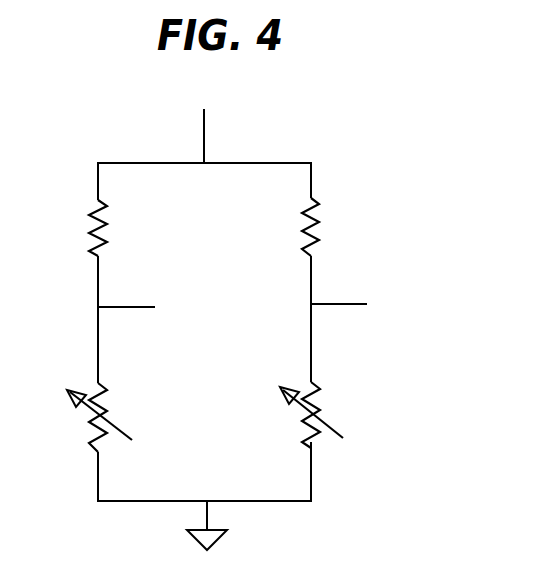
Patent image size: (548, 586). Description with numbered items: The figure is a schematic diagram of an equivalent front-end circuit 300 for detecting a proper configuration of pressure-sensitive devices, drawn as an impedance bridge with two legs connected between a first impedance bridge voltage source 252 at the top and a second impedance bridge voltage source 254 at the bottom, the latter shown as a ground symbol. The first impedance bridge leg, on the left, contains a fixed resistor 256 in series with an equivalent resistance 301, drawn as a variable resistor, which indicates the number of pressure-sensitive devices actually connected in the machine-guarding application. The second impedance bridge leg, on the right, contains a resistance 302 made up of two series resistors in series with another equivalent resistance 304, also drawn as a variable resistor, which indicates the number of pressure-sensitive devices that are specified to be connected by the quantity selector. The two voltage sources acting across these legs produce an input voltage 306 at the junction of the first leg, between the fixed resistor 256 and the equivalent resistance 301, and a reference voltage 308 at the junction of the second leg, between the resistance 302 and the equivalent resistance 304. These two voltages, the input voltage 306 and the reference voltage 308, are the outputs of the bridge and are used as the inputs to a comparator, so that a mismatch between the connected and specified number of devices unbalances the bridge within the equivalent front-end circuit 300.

The first impedance bridge voltage source 252 is at (226, 136).
The second impedance bridge voltage source 254 is at (217, 525).
The resistor R5 256 is at (74, 228).
The equivalent front-end circuit 300 is at (360, 147).
The equivalent resistance 301 is at (85, 417).
The resistance 302 is at (364, 228).
The equivalent resistance 304 is at (317, 425).
The input voltage Vi 306 is at (134, 308).
The reference voltage V_REF 308 is at (384, 315).